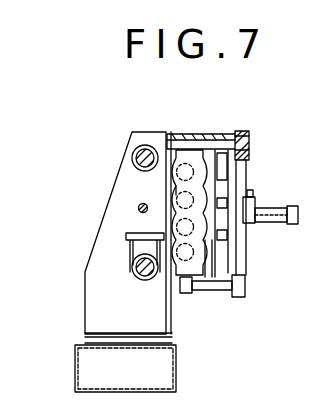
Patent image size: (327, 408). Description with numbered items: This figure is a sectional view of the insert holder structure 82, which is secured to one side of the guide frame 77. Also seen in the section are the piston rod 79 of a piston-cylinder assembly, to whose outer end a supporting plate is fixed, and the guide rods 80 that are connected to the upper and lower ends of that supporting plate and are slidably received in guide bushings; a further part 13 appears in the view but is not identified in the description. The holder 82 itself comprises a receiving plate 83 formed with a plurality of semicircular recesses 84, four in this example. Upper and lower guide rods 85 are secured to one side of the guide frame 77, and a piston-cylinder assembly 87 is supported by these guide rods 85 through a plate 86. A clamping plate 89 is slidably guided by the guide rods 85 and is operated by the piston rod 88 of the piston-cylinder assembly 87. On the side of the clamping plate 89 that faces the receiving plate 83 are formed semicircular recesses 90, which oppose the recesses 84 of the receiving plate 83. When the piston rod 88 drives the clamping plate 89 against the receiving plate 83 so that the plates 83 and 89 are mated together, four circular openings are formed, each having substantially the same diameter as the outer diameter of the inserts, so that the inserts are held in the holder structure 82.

The valve body 13 is at (168, 222).
The guide frame 77 is at (85, 293).
The piston rod 79 is at (138, 208).
The guide rods 80 is at (137, 152).
The insert holder structure 82 is at (253, 162).
The receiving plate 83 is at (168, 135).
The semicircular recesses 84 is at (185, 164).
The guide rods 85 is at (227, 135).
The plate 86 is at (240, 241).
The piston-cylinder assembly 87 is at (273, 213).
The piston rod 88 is at (238, 203).
The clamping plate 89 is at (212, 292).
The semicircular recesses 90 is at (175, 190).